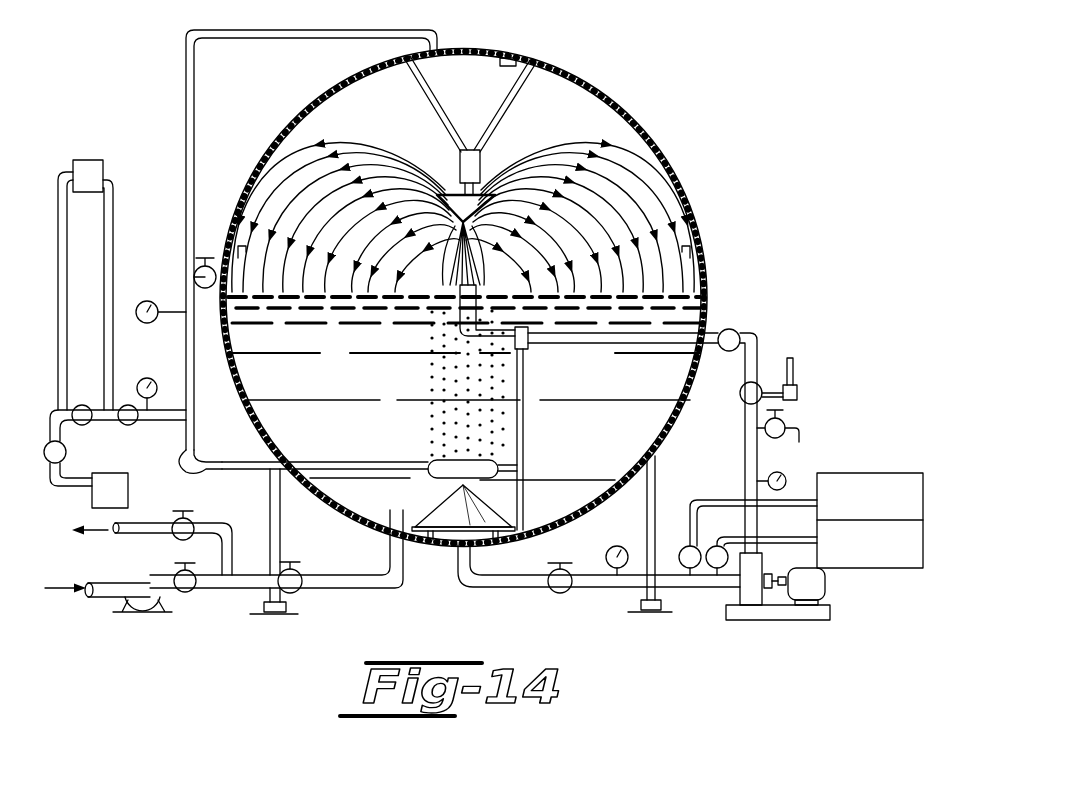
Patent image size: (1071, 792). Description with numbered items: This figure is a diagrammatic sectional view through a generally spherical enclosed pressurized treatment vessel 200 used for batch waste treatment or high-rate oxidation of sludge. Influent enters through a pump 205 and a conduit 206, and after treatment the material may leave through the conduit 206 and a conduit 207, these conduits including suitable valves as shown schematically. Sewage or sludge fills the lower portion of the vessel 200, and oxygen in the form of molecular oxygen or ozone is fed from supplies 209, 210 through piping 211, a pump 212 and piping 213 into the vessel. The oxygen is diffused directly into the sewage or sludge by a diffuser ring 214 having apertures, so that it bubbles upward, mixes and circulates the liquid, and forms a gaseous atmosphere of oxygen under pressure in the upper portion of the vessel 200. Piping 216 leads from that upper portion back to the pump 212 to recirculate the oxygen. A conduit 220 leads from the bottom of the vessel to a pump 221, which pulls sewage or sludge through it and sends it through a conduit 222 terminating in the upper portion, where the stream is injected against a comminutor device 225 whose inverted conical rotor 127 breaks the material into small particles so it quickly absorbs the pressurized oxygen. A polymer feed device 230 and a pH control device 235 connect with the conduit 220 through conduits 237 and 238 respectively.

The treatment vessel 200 is at (683, 166).
The comminutor device 225 is at (488, 180).
The rotor 127 is at (460, 284).
The conduit 222 is at (578, 344).
The diffuser ring 214 is at (500, 468).
The piping 213 is at (386, 470).
The piping 216 is at (304, 38).
The pump 212 is at (198, 466).
The oxygen supply 210 is at (74, 160).
The piping 211 is at (162, 424).
The oxygen supply 209 is at (98, 508).
The conduit 207 is at (164, 532).
The conduit 206 is at (250, 590).
The pump 205 is at (146, 614).
The conduit 220 is at (545, 587).
The pump 221 is at (740, 600).
The polymer feed device 230 is at (902, 473).
The pH control device 235 is at (904, 568).
The conduit 237 is at (810, 502).
The conduit 238 is at (812, 538).